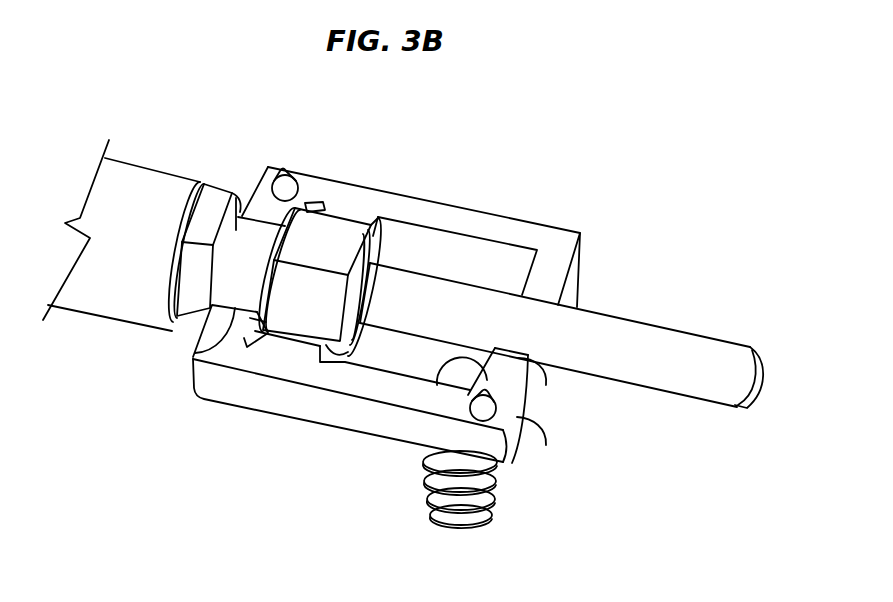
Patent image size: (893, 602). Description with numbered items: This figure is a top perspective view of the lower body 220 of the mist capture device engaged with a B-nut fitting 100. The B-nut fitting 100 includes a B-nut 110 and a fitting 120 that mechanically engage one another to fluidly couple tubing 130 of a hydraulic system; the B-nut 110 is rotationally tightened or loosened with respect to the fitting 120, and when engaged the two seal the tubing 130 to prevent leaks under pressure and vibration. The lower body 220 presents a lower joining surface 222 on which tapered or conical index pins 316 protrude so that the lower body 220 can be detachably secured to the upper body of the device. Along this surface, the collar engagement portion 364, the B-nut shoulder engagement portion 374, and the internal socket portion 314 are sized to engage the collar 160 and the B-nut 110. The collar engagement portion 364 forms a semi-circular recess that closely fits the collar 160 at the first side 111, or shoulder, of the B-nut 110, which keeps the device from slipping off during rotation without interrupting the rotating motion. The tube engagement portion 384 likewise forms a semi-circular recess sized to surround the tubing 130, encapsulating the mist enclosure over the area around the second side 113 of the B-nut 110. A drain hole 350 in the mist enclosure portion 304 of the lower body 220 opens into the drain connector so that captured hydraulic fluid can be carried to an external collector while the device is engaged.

The B-nut fitting 100 is at (168, 124).
The fitting 120 is at (200, 228).
The collar 160 is at (237, 227).
The first side 111 is at (257, 230).
The B-nut 110 is at (347, 230).
The second side 113 is at (378, 253).
The lower joining surface 222 is at (500, 228).
The tubing 130 is at (657, 340).
The mist enclosure portion 304 is at (407, 368).
The internal socket portion 314 is at (303, 338).
The collar engagement portion 364 is at (192, 353).
The B-nut shoulder engagement portion 374 is at (250, 343).
The drain hole 350 is at (458, 373).
The tube engagement portion 384 is at (537, 374).
The index pin 316 is at (528, 425).
The lower body 220 is at (403, 506).